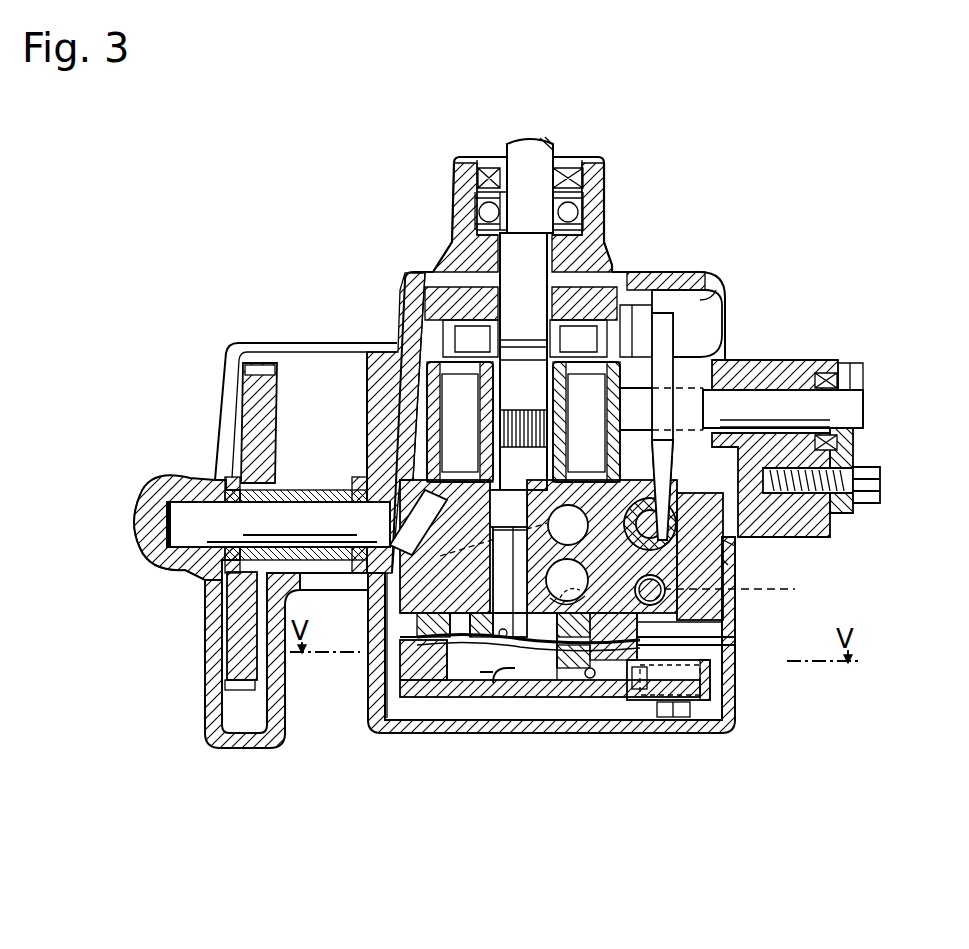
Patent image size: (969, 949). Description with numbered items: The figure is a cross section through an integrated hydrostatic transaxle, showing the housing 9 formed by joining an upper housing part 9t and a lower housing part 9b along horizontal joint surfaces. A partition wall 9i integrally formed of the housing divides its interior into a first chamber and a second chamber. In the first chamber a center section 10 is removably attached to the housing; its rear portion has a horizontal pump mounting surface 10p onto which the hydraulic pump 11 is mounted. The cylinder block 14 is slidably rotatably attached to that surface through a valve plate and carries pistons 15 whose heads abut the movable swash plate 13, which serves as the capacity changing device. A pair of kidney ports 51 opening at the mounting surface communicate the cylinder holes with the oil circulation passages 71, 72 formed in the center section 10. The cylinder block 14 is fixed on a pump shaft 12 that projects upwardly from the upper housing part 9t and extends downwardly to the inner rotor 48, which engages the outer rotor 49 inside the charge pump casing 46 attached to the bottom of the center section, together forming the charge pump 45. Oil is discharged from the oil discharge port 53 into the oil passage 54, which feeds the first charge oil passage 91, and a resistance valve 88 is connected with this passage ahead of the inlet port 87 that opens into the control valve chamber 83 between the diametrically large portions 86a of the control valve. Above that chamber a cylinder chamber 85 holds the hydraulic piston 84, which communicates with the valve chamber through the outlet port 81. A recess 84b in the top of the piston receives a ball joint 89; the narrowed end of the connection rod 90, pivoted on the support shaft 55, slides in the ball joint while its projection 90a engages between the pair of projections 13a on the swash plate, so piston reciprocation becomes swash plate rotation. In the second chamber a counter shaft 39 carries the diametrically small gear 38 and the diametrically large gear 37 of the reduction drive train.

The housing 9 is at (43, 487).
The upper housing part 9t is at (157, 495).
The lower housing part 9b is at (150, 556).
The partition wall 9i is at (382, 398).
The center section 10 is at (453, 605).
The pump mounting surface 10p is at (587, 570).
The hydraulic pump 11 is at (413, 412).
The pump shaft 12 is at (548, 150).
The movable swash plate 13 is at (457, 268).
The projections 13a is at (627, 272).
The cylinder block 14 is at (402, 347).
The pistons 15 is at (410, 308).
The diametrically large gear 37 is at (237, 658).
The diametrically small gear 38 is at (272, 575).
The counter shaft 39 is at (187, 518).
The charge pump 45 is at (473, 690).
The charge pump casing 46 is at (555, 690).
The inner rotor 48 is at (523, 648).
The outer rotor 49 is at (418, 690).
The kidney ports 51 is at (368, 462).
The oil discharge port 53 is at (500, 668).
The oil passage 54 is at (645, 676).
The support shaft 55 is at (783, 407).
The oil circulation passage 71 is at (568, 525).
The oil circulation passage 72 is at (568, 599).
The outlet port 81 is at (734, 587).
The control valve chamber 83 is at (735, 623).
The hydraulic piston 84 is at (726, 513).
The recess 84b is at (670, 487).
The cylinder chamber 85 is at (728, 565).
The diametrically large portions 86a is at (662, 601).
The inlet port 87 is at (735, 638).
The resistance valve 88 is at (712, 690).
The ball joint 89 is at (735, 546).
The connection rod 90 is at (708, 345).
The projection 90a is at (718, 283).
The first charge oil passage 91 is at (593, 680).